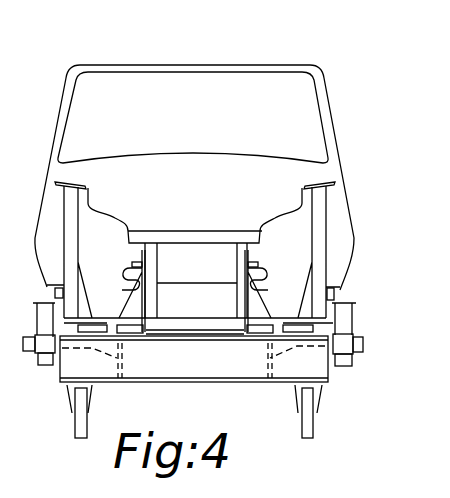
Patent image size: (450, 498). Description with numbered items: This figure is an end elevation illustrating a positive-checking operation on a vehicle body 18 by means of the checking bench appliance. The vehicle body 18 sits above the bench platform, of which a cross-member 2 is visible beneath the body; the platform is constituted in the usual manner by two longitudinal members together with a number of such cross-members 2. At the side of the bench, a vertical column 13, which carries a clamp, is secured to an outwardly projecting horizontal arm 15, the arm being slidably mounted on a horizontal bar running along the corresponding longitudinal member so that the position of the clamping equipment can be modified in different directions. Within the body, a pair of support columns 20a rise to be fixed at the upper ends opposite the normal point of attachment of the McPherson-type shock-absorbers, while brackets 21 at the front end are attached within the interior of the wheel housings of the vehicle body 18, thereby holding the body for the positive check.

The cross-member 2 is at (152, 367).
The vertical column 13 is at (346, 318).
The horizontal arm 15 is at (363, 345).
The vehicle body 18 is at (50, 166).
The support columns 20a is at (68, 205).
The brackets 21 is at (128, 280).